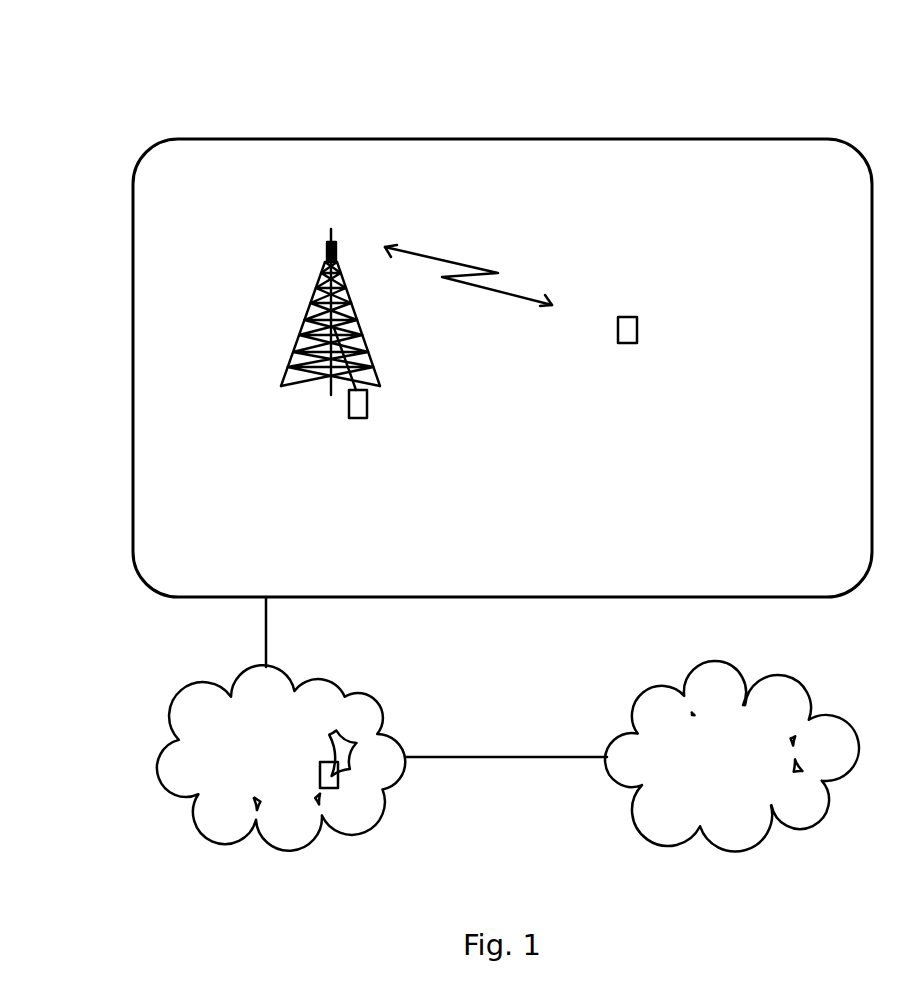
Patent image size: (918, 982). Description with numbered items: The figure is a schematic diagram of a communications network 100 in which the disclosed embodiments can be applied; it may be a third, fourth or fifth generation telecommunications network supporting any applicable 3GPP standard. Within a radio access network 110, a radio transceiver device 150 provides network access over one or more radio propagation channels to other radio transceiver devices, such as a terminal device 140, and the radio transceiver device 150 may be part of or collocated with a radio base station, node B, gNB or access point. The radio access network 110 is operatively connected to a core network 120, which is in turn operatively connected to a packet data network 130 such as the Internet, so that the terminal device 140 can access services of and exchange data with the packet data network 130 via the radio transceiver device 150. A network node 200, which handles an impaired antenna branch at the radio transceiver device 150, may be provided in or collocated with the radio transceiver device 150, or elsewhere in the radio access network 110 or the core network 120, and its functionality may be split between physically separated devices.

The communications network 100 is at (225, 84).
The radio access network 110 is at (133, 422).
The core network 120 is at (277, 753).
The packet data network 130 is at (760, 778).
The terminal device 140 is at (628, 344).
The radio transceiver device 150 is at (330, 236).
The network node 200 is at (349, 409).